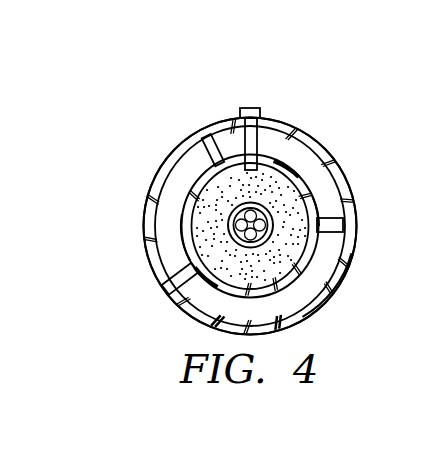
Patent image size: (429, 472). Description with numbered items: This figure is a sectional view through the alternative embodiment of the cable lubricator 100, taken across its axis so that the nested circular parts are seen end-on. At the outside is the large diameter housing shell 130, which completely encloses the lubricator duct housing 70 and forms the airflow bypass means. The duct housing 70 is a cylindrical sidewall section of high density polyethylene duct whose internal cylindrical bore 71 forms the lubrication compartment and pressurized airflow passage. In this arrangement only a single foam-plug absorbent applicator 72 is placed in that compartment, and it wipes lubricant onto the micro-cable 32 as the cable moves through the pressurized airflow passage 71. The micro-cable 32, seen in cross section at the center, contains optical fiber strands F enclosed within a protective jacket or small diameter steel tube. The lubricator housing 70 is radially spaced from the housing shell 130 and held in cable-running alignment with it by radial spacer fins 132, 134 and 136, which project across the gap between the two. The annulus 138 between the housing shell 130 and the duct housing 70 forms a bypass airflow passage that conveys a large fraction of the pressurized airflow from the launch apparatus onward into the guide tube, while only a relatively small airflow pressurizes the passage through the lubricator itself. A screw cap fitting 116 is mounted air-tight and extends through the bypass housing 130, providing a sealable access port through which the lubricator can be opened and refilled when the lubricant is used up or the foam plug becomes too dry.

The cable lubricator 100 is at (196, 74).
The bypass housing shell 130 is at (153, 205).
The lubricator duct housing 70 is at (200, 172).
The internal cylindrical bore 71 is at (185, 229).
The foam-plug absorbent applicator 72 is at (316, 203).
The annulus 138 is at (311, 288).
The micro-cable 32 is at (298, 205).
The optical fiber strands F is at (228, 224).
The screw cap fitting 116 is at (253, 108).
The radial spacer fin 134 is at (217, 137).
The radial spacer fin 132 is at (170, 273).
The radial spacer fin 136 is at (337, 235).